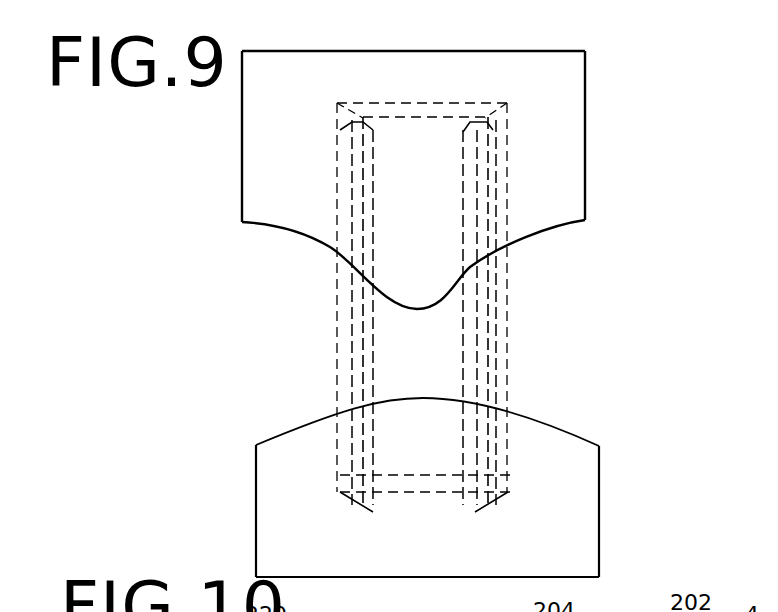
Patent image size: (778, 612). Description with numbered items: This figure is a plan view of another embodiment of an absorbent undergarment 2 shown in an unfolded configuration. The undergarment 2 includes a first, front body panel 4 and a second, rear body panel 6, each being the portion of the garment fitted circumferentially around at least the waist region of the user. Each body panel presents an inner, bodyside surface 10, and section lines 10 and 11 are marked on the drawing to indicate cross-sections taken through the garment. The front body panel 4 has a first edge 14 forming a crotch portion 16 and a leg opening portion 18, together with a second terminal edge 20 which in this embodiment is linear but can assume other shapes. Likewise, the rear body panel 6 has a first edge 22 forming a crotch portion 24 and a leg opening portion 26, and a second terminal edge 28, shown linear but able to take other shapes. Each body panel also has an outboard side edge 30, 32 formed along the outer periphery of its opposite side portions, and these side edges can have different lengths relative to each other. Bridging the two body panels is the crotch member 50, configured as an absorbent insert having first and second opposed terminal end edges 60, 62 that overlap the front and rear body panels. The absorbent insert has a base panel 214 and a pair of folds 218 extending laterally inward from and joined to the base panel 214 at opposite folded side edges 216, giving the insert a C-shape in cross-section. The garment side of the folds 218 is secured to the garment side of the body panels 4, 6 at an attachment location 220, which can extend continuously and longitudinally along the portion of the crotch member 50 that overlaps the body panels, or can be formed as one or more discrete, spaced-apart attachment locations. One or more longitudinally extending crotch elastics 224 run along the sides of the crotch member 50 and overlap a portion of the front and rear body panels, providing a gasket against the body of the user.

The undergarment 2 is at (623, 98).
The first, front body panel 4 is at (557, 117).
The second, rear body panel 6 is at (548, 537).
The inner, bodyside surface 10 is at (475, 78).
The section line 11- 11 is at (330, 335).
The first edge 14 is at (278, 230).
The crotch portion 16 is at (418, 257).
The leg opening portion 18 is at (547, 228).
The second terminal edge 20 is at (308, 50).
The first edge 22 is at (523, 425).
The crotch portion 24 is at (410, 375).
The leg opening portion 26 is at (303, 430).
The second terminal edge 28 is at (400, 577).
The outboard side edge 30 is at (242, 110).
The outboard side edge 32 is at (257, 487).
The crotch member 50 is at (334, 278).
The first terminal end edge 60 is at (402, 102).
The second terminal end edge 62 is at (413, 492).
The base panel 214 is at (438, 107).
The folded side edges 216 is at (338, 162).
The folds 218 is at (340, 185).
The attachment location 220 is at (337, 128).
The crotch elastics 224 is at (343, 372).